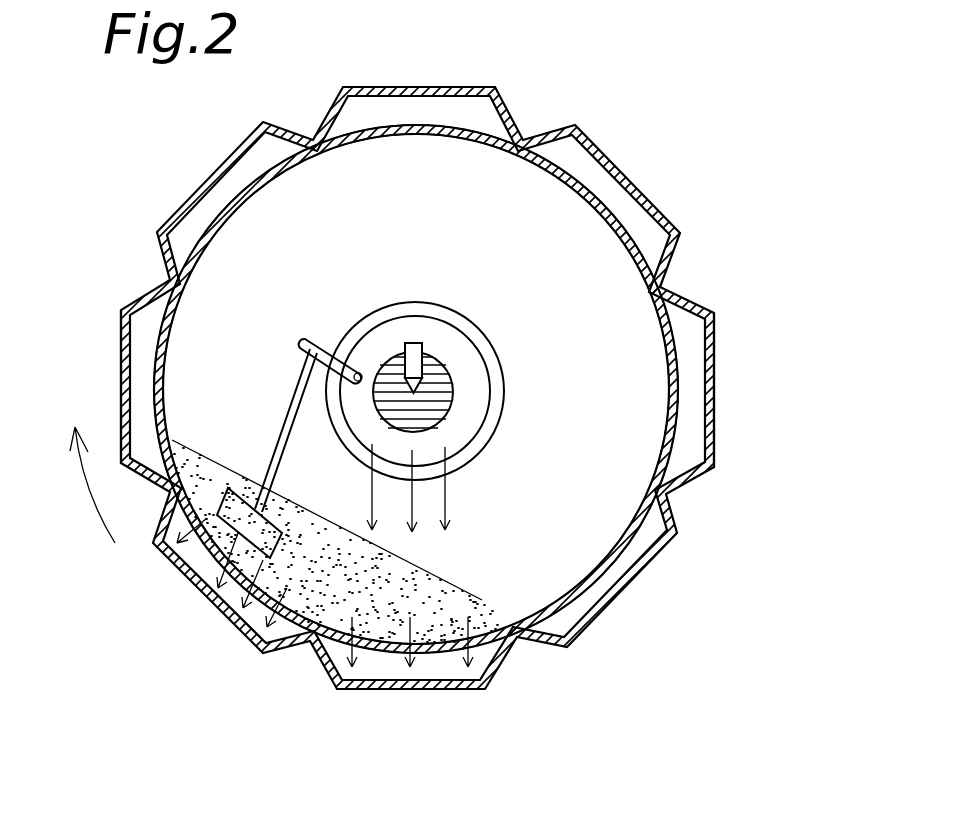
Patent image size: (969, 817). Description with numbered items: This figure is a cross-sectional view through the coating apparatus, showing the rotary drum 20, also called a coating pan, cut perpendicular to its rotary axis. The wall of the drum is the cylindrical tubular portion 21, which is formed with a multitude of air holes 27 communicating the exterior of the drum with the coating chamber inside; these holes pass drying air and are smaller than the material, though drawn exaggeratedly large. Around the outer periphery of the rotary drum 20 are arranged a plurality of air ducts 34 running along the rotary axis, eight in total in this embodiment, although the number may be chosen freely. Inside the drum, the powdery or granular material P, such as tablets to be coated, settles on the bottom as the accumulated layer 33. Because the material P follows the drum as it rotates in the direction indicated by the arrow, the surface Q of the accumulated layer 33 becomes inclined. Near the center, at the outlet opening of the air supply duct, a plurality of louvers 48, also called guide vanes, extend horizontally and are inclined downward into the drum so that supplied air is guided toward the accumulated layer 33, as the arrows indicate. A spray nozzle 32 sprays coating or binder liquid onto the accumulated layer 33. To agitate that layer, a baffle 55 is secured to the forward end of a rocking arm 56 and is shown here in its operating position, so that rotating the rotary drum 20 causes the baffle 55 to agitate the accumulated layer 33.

The rotary drum 20 is at (578, 156).
The cylindrical tubular portion 21 is at (667, 316).
The air holes 27 is at (601, 198).
The spray nozzle 32 is at (422, 350).
The accumulated layer 33 is at (237, 585).
The air ducts 34 is at (132, 302).
The louvers 48 is at (450, 387).
The baffle 55 is at (215, 556).
The rocking arm 56 is at (304, 340).
The powdery or granular material P is at (305, 605).
The surface of the accumulated layer Q is at (463, 591).